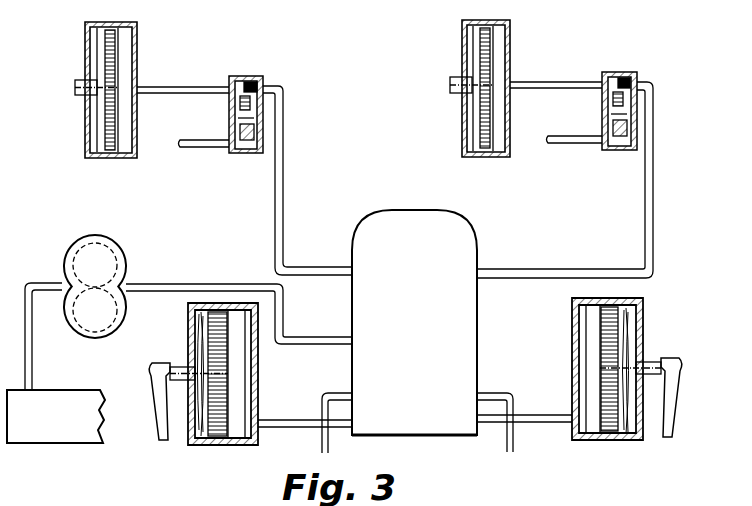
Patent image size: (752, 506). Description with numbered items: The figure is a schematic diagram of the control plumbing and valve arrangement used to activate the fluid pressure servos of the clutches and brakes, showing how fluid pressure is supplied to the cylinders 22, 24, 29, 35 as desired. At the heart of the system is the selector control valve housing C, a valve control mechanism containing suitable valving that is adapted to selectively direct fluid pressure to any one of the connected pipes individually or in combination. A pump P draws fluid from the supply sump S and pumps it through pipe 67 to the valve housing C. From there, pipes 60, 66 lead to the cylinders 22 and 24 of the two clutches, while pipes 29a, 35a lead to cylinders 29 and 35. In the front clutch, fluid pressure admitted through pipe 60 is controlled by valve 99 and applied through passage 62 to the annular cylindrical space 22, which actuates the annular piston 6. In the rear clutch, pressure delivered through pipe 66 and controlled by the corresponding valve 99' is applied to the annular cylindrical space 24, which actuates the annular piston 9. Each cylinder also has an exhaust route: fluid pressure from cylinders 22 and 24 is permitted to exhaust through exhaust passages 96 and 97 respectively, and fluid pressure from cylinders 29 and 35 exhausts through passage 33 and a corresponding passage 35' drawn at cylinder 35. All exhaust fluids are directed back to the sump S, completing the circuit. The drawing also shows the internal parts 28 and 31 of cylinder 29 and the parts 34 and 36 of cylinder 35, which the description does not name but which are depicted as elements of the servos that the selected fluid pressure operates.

The annular piston 9 is at (107, 125).
The annular cylindrical space 24 is at (112, 124).
The passage 62 is at (214, 88).
The valve 99' is at (257, 91).
The exhaust passage 97 is at (211, 148).
The pipe 66 is at (309, 267).
The annular piston 6 is at (482, 126).
The annular cylindrical space 22 is at (488, 140).
The valve 99 is at (627, 90).
The exhaust passage 96 is at (575, 144).
The pipe 60 is at (654, 150).
The valve control mechanism C is at (478, 325).
The pump P is at (80, 252).
The supply sump S is at (84, 392).
The pipe 67 is at (212, 284).
The cylinder 29 is at (240, 370).
The clutch disc pack 28 is at (218, 438).
The springs 31 is at (198, 329).
The pipe 29a is at (282, 420).
The exhaust passage 33 is at (321, 446).
The clutch cylinder 34 is at (603, 334).
The cylinder 35 is at (609, 389).
The springs 36 is at (626, 320).
The pipe 35a is at (533, 415).
The return pipe 35' is at (515, 430).